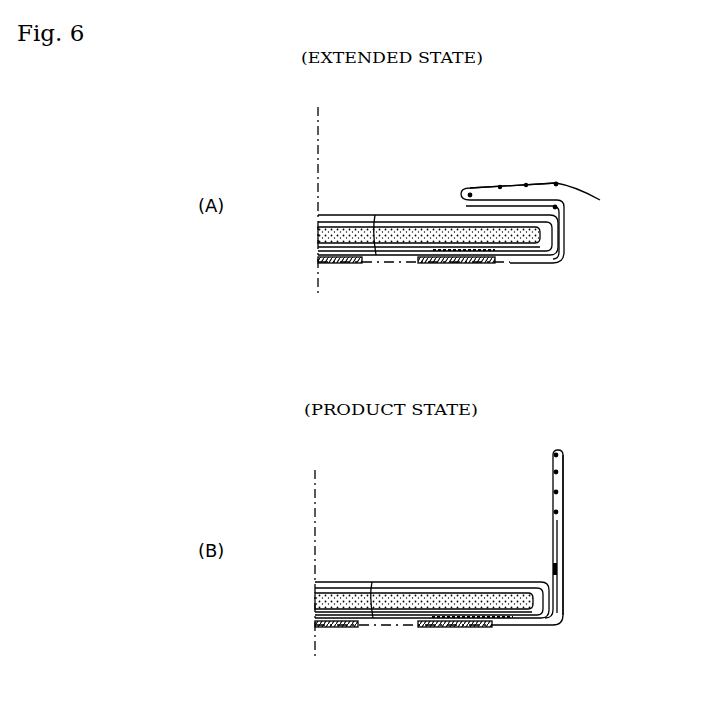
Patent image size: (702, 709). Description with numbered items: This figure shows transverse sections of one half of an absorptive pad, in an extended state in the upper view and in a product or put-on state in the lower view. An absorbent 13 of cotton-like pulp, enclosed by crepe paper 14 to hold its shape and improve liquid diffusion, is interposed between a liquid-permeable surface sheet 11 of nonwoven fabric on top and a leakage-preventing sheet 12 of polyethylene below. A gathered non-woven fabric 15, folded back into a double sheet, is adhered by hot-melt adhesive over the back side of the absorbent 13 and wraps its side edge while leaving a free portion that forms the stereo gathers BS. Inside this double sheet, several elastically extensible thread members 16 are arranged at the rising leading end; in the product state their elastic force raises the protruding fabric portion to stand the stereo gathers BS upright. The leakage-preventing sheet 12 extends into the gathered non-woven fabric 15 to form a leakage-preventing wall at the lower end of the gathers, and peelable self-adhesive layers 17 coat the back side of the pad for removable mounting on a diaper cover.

The liquid-permeable surface sheet 11 is at (405, 215).
The leakage-preventing sheet 12 is at (387, 263).
The absorbent 13 is at (428, 240).
The crepe paper 14 is at (372, 215).
The gathered non-woven fabric 15 is at (538, 186).
The elastically extensible thread members 16 is at (470, 193).
The peelable self-adhesive layers 17 is at (342, 264).
The stereo gathers BS is at (505, 178).